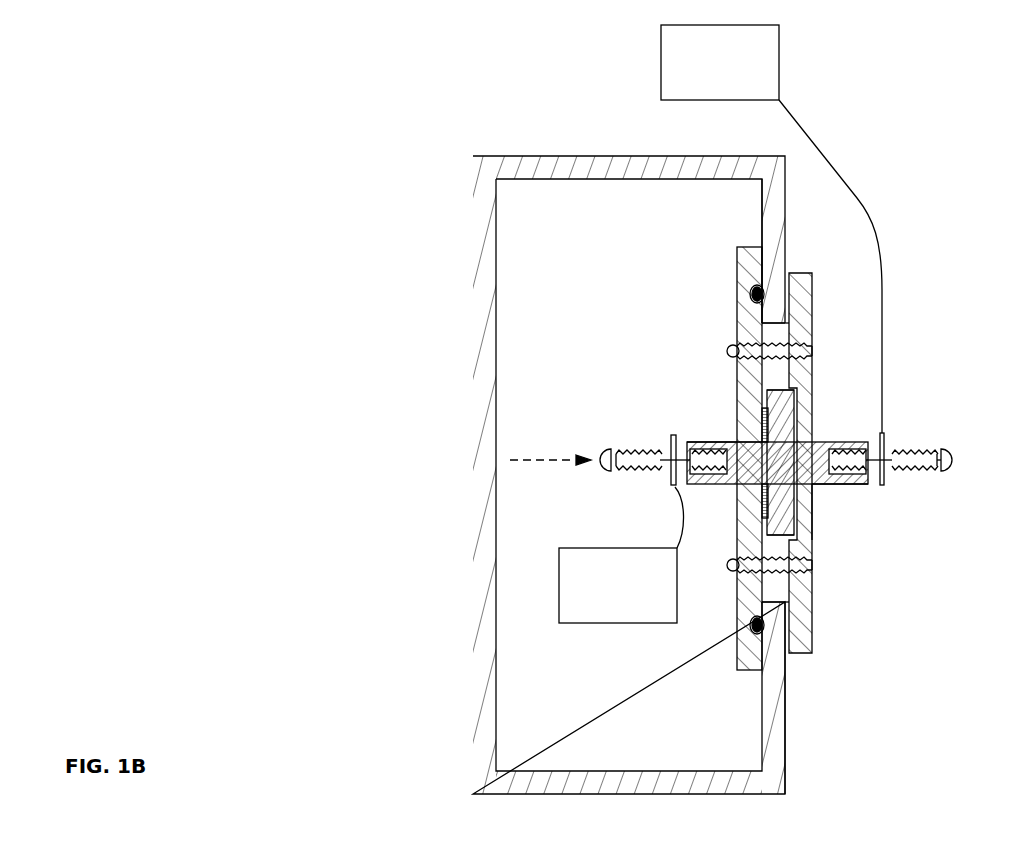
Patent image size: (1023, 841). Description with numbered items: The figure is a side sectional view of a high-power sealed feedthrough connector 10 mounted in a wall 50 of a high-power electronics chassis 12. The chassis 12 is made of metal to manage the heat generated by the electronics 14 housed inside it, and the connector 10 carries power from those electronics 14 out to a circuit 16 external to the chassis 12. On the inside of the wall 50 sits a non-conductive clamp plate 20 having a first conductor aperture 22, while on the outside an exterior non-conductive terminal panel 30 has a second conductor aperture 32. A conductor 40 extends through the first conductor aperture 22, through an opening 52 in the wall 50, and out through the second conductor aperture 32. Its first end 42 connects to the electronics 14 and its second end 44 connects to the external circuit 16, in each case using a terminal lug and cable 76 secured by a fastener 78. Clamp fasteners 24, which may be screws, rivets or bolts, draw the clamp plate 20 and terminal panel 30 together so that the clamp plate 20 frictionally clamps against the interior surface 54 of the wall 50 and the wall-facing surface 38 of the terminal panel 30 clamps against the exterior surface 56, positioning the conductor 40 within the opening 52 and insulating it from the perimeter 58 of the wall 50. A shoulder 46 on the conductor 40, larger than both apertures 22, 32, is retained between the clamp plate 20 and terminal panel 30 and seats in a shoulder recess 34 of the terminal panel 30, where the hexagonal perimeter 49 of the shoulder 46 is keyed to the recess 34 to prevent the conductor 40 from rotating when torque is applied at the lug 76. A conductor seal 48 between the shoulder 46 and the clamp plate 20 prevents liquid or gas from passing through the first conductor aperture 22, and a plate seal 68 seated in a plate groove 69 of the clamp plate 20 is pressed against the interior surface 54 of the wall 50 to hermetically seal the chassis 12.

The high-power sealed feedthrough connector 10 is at (441, 106).
The high-power electronics chassis 12 is at (538, 156).
The electronics 14 is at (600, 607).
The circuit 16 is at (767, 53).
The non-conductive clamp plate 20 is at (736, 268).
The first conductor aperture 22 is at (729, 428).
The clamp fasteners 24 is at (731, 349).
The exterior non-conductive terminal panel 30 is at (800, 273).
The second conductor aperture 32 is at (828, 492).
The shoulder recess 34 is at (796, 394).
The wall-facing surface 38 is at (775, 328).
The conductor 40 is at (741, 472).
The first end 42 is at (690, 428).
The second end 44 is at (872, 492).
The shoulder 46 is at (800, 540).
The conductor seal 48 is at (763, 415).
The perimeter of the shoulder 49 is at (773, 390).
The wall 50 is at (790, 214).
The opening 52 is at (770, 586).
The interior surface 54 is at (762, 199).
The exterior surface 56 is at (787, 722).
The perimeter of the wall 58 is at (762, 598).
The plate seal 68 is at (750, 296).
The plate groove 69 is at (758, 290).
The terminal lug and cable 76 is at (883, 405).
The fastener 78 is at (605, 450).